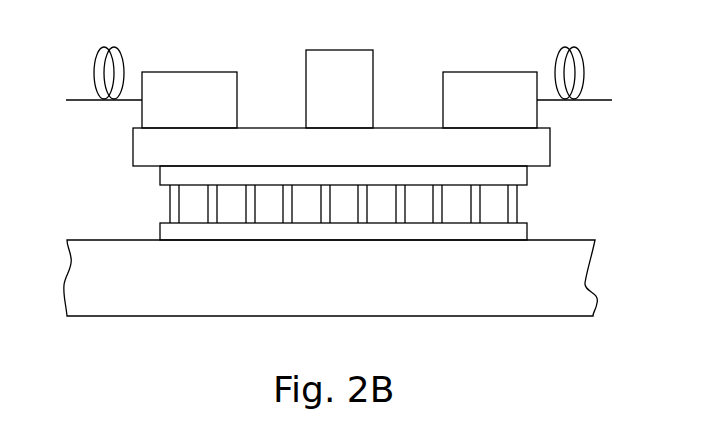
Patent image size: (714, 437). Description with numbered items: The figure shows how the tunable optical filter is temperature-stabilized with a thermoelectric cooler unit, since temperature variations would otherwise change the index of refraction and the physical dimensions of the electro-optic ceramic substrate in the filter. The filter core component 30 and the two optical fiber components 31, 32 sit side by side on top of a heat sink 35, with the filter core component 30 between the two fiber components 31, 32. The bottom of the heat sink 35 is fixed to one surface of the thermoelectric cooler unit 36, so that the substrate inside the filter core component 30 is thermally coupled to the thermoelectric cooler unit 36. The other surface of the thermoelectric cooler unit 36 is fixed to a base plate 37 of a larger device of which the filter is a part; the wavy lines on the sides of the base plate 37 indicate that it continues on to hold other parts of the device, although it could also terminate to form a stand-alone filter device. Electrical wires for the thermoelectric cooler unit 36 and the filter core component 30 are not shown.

The filter core component 30 is at (359, 57).
The optical fiber component 31 is at (212, 77).
The optical fiber component 32 is at (471, 83).
The heat sink 35 is at (541, 147).
The thermoelectric cooler unit 36 is at (108, 203).
The base plate 37 is at (129, 302).